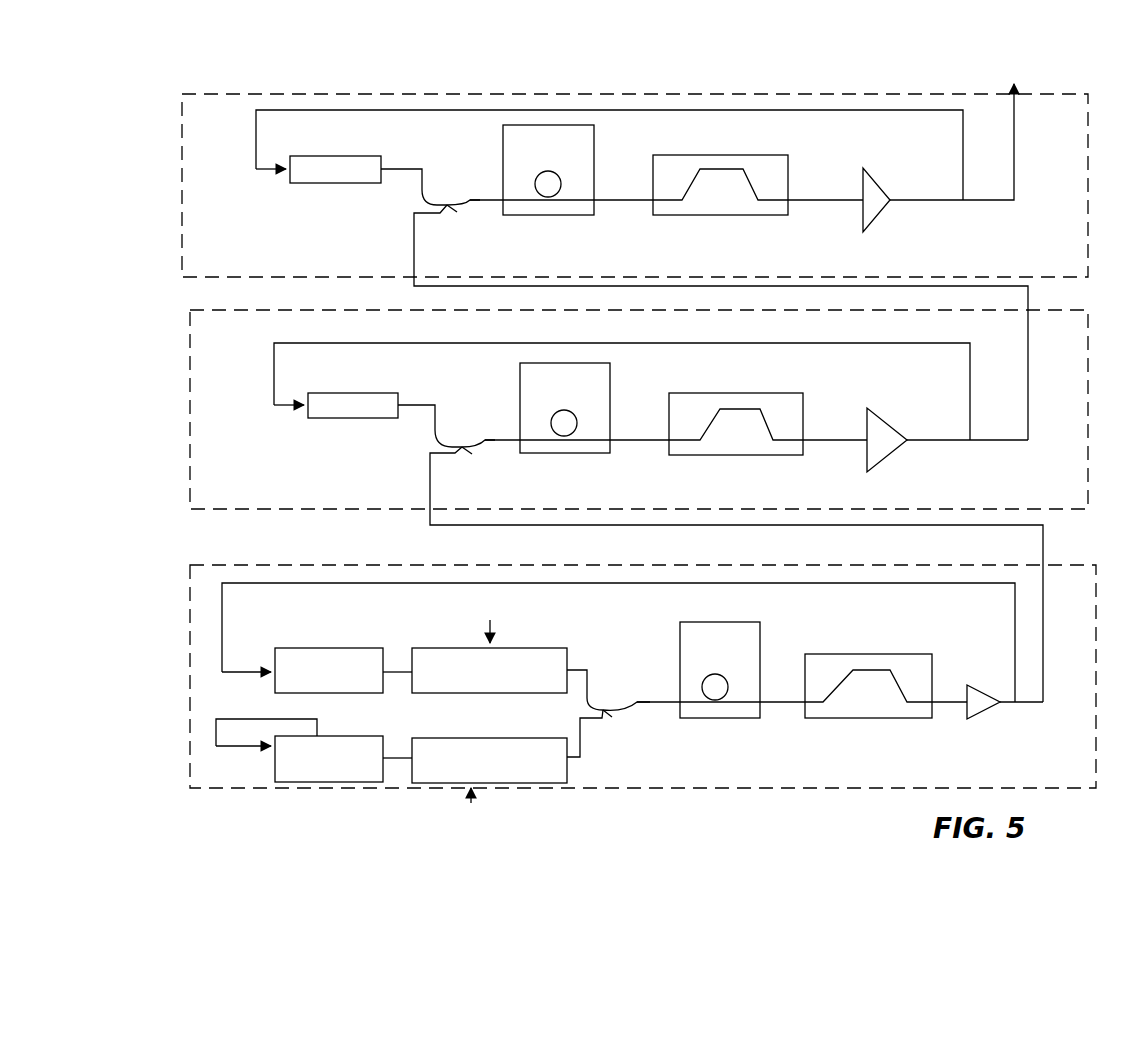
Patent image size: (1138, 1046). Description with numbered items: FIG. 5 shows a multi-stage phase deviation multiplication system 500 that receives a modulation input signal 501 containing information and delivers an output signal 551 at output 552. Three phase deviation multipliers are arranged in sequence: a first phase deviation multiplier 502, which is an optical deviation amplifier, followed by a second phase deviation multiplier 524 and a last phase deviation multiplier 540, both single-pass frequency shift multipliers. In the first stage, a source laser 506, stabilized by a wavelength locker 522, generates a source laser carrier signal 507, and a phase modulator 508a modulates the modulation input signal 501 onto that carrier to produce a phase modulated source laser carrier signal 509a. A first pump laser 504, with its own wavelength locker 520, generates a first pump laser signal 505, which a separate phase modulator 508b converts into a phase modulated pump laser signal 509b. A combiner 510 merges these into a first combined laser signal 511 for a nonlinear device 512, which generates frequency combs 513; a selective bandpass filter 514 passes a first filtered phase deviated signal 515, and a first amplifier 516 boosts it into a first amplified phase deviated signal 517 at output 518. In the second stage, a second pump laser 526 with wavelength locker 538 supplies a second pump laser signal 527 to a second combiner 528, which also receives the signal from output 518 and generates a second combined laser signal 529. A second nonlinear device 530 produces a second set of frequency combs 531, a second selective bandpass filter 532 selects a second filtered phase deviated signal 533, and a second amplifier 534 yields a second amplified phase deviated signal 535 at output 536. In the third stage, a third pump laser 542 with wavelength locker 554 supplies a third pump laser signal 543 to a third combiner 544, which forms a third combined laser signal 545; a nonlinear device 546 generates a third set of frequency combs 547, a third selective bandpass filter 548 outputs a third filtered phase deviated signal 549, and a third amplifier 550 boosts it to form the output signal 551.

The multi-stage phase deviation multiplication system 500 is at (200, 55).
The last phase deviation multiplier 540 is at (182, 160).
The second phase deviation multiplier 524 is at (190, 368).
The first phase deviation multiplier 502 is at (190, 630).
The wavelength locker 554 is at (256, 127).
The third pump laser 542 is at (312, 183).
The third pump laser signal 543 is at (400, 168).
The third combiner 544 is at (443, 207).
The third combined laser signal 545 is at (483, 202).
The nonlinear device 546 is at (566, 215).
The third set of frequency combs 547 is at (615, 202).
The third selective bandpass filter 548 is at (760, 155).
The third filtered phase deviated signal 549 is at (810, 202).
The third amplifier 550 is at (873, 185).
The output signal 551 is at (945, 48).
The output 552 is at (1016, 80).
The wavelength locker 538 is at (274, 382).
The second pump laser 526 is at (340, 418).
The second pump laser signal 527 is at (418, 405).
The second combiner 528 is at (452, 440).
The second combined laser signal 529 is at (508, 442).
The second nonlinear device 530 is at (610, 403).
The second set of frequency combs 531 is at (633, 442).
The second selective bandpass filter 532 is at (780, 393).
The second filtered phase deviated signal 533 is at (812, 442).
The second amplifier 534 is at (870, 430).
The second amplified phase deviated signal 535 is at (985, 440).
The output 536 is at (1030, 345).
The wavelength locker 520 is at (222, 620).
The first pump laser 504 is at (290, 648).
The first pump laser signal 505 is at (395, 660).
The phase modulator 508b is at (518, 648).
The phase modulated pump laser signal 509b is at (590, 668).
The wavelength locker 522 is at (216, 735).
The source laser 506 is at (275, 768).
The source laser carrier signal 507 is at (395, 752).
The phase modulator 508a is at (570, 783).
The modulation input signal 501 is at (473, 798).
The phase modulated source laser carrier signal 509a is at (578, 758).
The combiner 510 is at (610, 708).
The first combined laser signal 511 is at (650, 704).
The nonlinear device 512 is at (718, 622).
The frequency combs 513 is at (775, 704).
The selective bandpass filter 514 is at (915, 654).
The first filtered phase deviated signal 515 is at (950, 704).
The first amplifier 516 is at (972, 695).
The first amplified phase deviated signal 517 is at (1043, 705).
The output 518 is at (1043, 655).